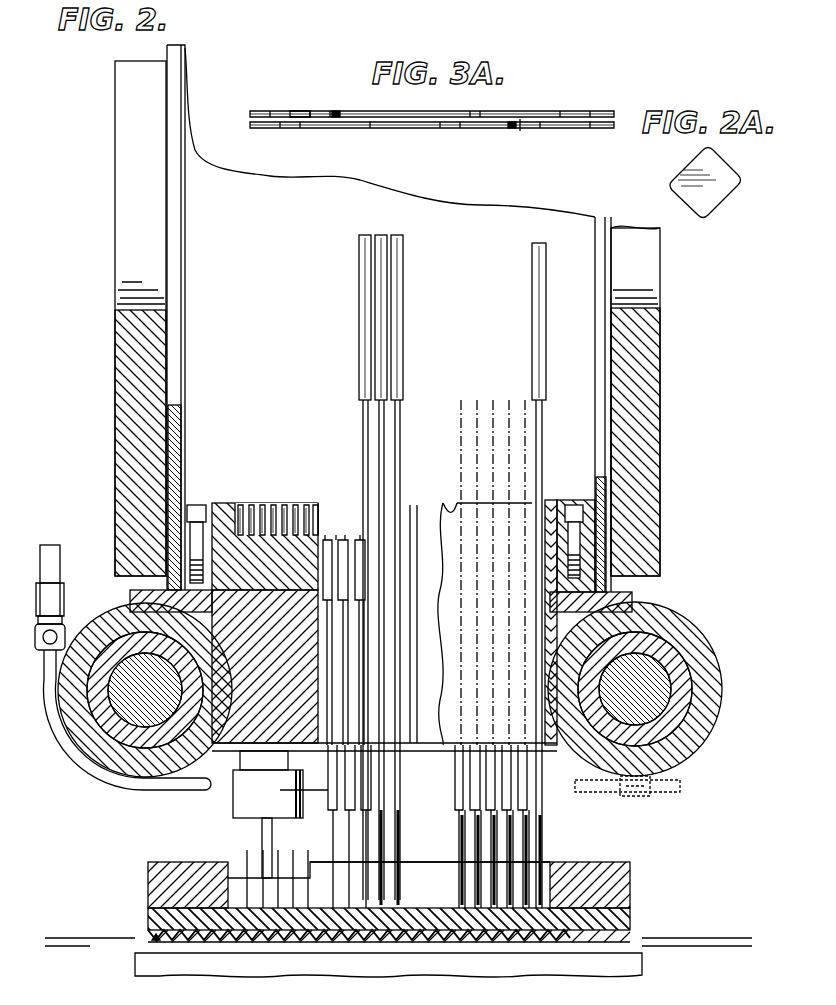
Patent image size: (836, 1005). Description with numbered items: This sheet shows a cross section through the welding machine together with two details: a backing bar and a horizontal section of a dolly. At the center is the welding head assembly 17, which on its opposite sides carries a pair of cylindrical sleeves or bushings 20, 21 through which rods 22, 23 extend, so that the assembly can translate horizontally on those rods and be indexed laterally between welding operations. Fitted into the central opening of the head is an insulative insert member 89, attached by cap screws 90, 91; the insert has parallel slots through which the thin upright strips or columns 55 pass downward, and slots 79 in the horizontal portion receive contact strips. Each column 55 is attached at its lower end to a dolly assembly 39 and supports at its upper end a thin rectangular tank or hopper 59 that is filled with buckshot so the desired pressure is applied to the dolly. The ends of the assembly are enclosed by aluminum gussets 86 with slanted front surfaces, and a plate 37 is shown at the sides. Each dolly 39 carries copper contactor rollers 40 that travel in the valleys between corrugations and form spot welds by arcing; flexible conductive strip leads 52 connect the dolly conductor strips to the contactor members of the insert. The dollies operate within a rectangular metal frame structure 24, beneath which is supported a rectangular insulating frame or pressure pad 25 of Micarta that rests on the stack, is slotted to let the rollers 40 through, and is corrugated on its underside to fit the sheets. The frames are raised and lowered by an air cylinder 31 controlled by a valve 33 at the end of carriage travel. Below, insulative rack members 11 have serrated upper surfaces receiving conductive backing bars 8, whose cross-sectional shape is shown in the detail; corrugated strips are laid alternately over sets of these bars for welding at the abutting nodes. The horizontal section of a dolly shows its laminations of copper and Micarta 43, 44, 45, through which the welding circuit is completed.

In FIG. 2, the backing bar 8 is at (430, 942).
In FIG. 2A, the backing bar 8 is at (713, 203).
In FIG. 2, the rack 11 is at (645, 953).
In FIG. 2, the welding head assembly 17 is at (580, 465).
In FIG. 2, the cylindrical sleeve or bushing 20 is at (70, 745).
In FIG. 2, the cylindrical sleeve or bushing 21 is at (720, 676).
In FIG. 2, the rod 22 is at (138, 735).
In FIG. 2, the rod 23 is at (650, 720).
In FIG. 2, the rectangular frame structure 24 is at (640, 872).
In FIG. 2, the rectangular frame or pressure pad 25 is at (632, 920).
In FIG. 2, the air cylinder 31 is at (240, 760).
In FIG. 2, the valve 33 is at (232, 812).
In FIG. 2, the plate 37 is at (612, 478).
In FIG. 2, the dolly assembly 39 is at (333, 836).
In FIG. 3A, the dolly assembly 39 is at (566, 105).
In FIG. 2, the contactor roller 40 is at (560, 905).
In FIG. 3A, the lamination 43 is at (320, 128).
In FIG. 3A, the lamination 44 is at (262, 110).
In FIG. 3A, the lamination 45 is at (522, 128).
In FIG. 2, the flexible conductive strip lead 52 is at (292, 793).
In FIG. 2, the strip or column 55 is at (388, 444).
In FIG. 2, the tank or hopper 59 is at (358, 310).
In FIG. 2, the slot 79 is at (290, 520).
In FIG. 2, the gusset 86 is at (186, 438).
In FIG. 2, the insulative insert member 89 is at (228, 500).
In FIG. 2, the cap screw 90 is at (196, 535).
In FIG. 2, the cap screw 91 is at (590, 530).